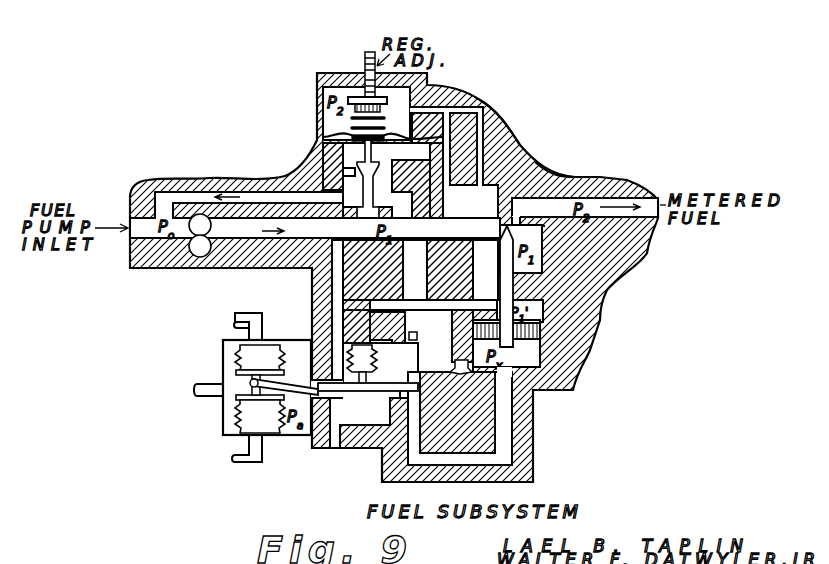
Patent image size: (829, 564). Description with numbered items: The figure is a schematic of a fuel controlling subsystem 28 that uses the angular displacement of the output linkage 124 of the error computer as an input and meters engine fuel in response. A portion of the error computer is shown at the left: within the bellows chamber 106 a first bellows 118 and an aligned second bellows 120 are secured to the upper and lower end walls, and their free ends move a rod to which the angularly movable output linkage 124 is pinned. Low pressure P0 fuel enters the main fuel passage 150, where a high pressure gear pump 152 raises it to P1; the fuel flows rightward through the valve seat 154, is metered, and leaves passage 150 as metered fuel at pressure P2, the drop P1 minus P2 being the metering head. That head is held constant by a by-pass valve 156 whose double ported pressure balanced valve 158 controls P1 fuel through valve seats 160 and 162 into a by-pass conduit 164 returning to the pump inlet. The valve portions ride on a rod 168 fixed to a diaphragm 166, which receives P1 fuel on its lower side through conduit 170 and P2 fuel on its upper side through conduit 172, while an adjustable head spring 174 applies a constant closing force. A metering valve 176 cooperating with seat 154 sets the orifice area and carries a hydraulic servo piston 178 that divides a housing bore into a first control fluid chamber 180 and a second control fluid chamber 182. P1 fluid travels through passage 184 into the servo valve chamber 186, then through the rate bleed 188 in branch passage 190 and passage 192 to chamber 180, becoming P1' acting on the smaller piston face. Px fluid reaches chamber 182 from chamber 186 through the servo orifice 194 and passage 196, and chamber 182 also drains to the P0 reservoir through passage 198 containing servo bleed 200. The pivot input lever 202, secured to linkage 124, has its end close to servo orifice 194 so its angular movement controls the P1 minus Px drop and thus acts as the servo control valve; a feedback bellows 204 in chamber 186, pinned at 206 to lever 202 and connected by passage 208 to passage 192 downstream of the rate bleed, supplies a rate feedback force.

The fuel controlling subsystem 28 is at (546, 160).
The bellows chamber 106 is at (252, 387).
The first bellows 118 is at (272, 350).
The second bellows 120 is at (240, 420).
The output linkage 124 is at (250, 381).
The main fuel passage 150 is at (140, 215).
The high pressure gear pump 152 is at (184, 270).
The valve seat 154 is at (536, 197).
The by-pass valve 156 is at (466, 86).
The double ported pressure balanced valve 158 is at (380, 186).
The valve seat 160 is at (364, 234).
The valve seat 162 is at (427, 128).
The by-pass conduit 164 is at (186, 200).
The diaphragm 166 is at (343, 136).
The rod 168 is at (343, 172).
The conduit 170 is at (443, 167).
The conduit 172 is at (494, 110).
The adjustable head spring 174 is at (350, 131).
The metering valve 176 is at (540, 238).
The hydraulic servo piston 178 is at (540, 333).
The first control fluid chamber 180 is at (543, 306).
The second control fluid chamber 182 is at (540, 357).
The passage 184 is at (340, 278).
The servo valve chamber 186 is at (358, 448).
The rate bleed 188 is at (428, 326).
The branch passage 190 is at (410, 360).
The passage 192 is at (438, 302).
The servo orifice 194 is at (425, 400).
The passage 196 is at (416, 440).
The passage 198 is at (450, 270).
The servo bleed 200 is at (463, 376).
The pivot input lever 202 is at (380, 405).
The bellows 204 is at (362, 367).
The pin 206 is at (335, 447).
The passage 208 is at (387, 344).